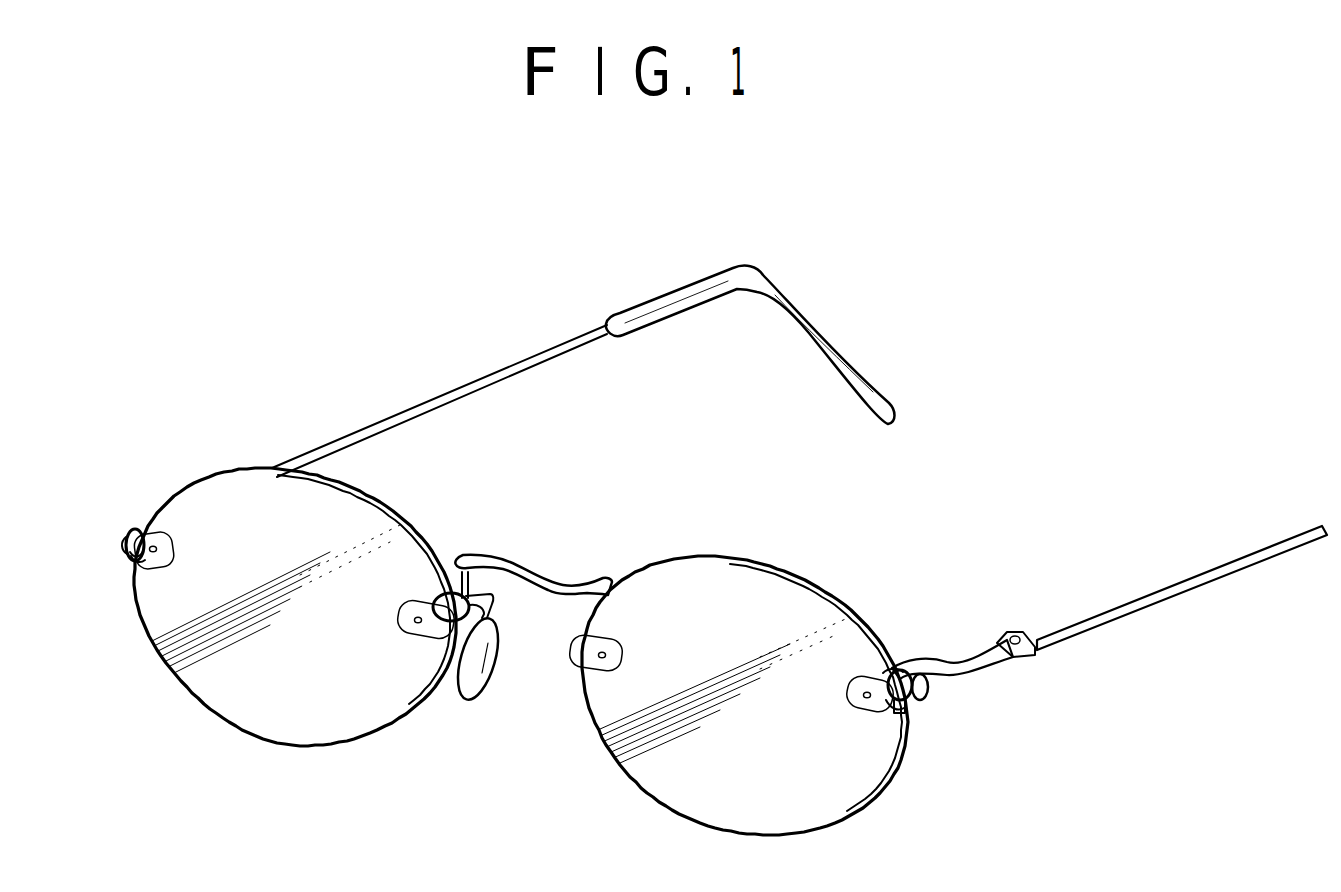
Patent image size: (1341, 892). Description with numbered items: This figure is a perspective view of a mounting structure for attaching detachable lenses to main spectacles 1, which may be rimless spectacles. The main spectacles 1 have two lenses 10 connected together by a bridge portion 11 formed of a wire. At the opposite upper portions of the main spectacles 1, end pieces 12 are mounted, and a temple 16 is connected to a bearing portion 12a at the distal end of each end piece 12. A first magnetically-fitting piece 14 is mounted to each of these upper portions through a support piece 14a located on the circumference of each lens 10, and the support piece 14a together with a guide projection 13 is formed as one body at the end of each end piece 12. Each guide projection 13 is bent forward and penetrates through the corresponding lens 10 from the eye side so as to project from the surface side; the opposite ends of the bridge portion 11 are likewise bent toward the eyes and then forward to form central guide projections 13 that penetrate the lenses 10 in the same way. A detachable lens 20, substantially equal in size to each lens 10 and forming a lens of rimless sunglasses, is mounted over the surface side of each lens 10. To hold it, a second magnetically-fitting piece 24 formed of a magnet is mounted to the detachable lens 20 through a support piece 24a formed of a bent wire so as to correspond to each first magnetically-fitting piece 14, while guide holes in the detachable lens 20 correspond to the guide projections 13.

The main spectacles 1 is at (632, 508).
The lens 10 is at (362, 494).
The bridge portion 11 is at (568, 583).
The end piece 12 is at (883, 673).
The bearing portion 12a is at (1015, 633).
The guide projection 13 is at (157, 553).
The first magnetically-fitting piece 14 is at (135, 530).
The support piece 14a is at (903, 670).
The temple 16 is at (440, 397).
The detachable lens 20 is at (393, 517).
The second magnetically-fitting piece 24 is at (132, 540).
The support piece 24a is at (140, 562).